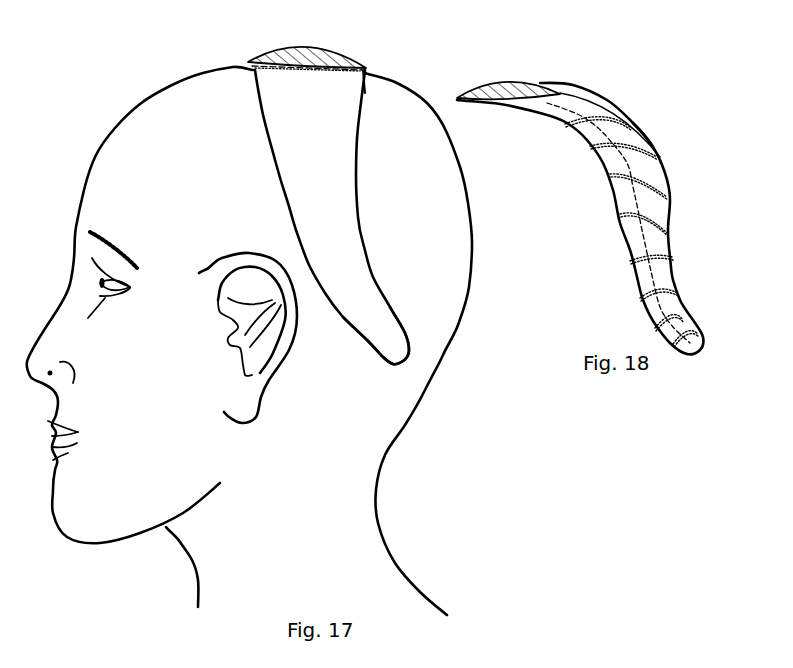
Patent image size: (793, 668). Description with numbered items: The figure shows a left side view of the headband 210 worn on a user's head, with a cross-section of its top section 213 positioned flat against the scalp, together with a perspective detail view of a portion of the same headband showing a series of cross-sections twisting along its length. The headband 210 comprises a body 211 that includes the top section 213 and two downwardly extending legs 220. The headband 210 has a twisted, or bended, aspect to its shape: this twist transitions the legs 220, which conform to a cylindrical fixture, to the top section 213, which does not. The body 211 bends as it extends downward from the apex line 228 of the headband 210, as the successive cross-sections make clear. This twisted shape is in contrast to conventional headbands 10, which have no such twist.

In FIG. 17, the conventional headband 10 is at (332, 217).
In FIG. 17, the headband 210 is at (287, 44).
In FIG. 18, the headband 210 is at (510, 87).
In FIG. 17, the body 211 is at (364, 94).
In FIG. 18, the body 211 is at (658, 137).
In FIG. 18, the top section 213 is at (573, 84).
In FIG. 17, the legs 220 is at (368, 274).
In FIG. 18, the legs 220 is at (677, 250).
In FIG. 17, the apex line 228 is at (267, 76).